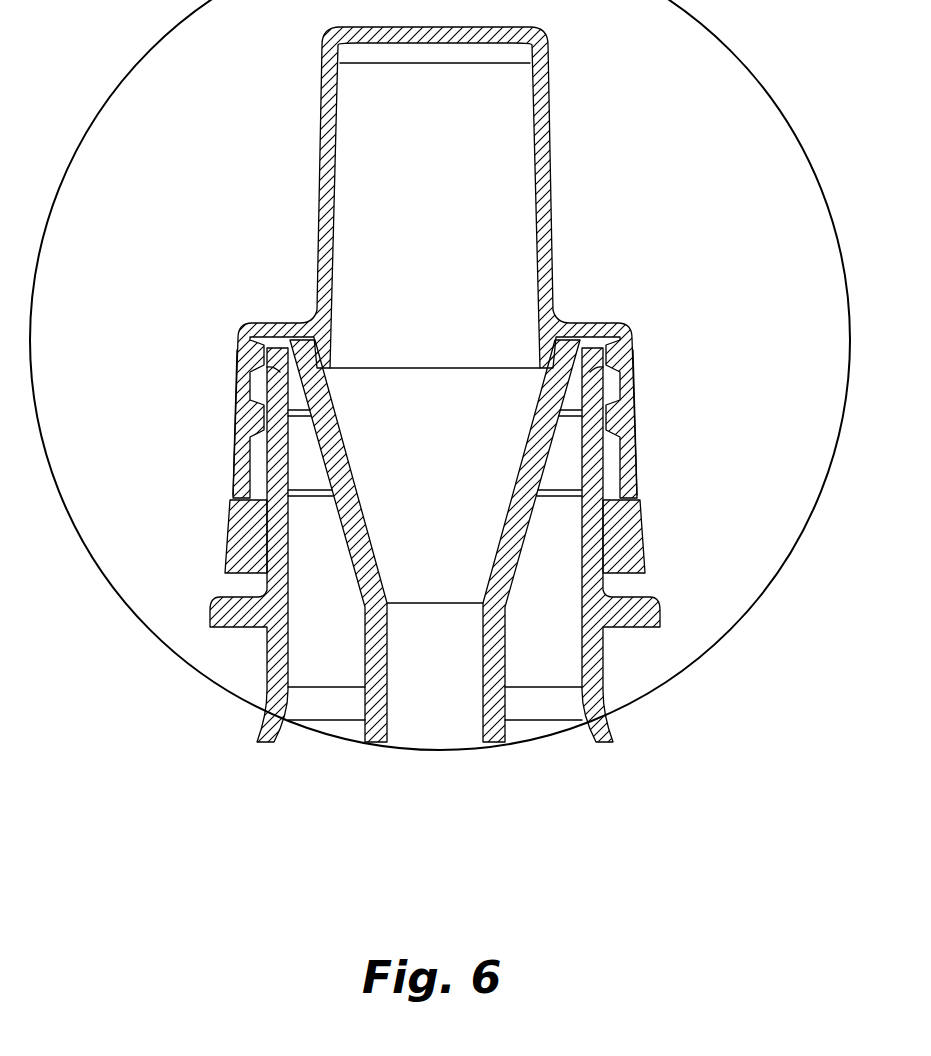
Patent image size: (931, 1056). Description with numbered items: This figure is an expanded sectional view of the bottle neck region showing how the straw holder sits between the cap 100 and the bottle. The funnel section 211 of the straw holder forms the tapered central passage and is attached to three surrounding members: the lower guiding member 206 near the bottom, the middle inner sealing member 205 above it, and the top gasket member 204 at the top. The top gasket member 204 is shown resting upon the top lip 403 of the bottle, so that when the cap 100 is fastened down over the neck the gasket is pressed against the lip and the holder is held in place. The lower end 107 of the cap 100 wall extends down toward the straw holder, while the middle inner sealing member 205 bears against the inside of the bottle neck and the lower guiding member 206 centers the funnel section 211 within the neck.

The cap 100 is at (455, 216).
The cap wall lower end 107 is at (334, 358).
The top gasket member 204 is at (305, 333).
The middle inner sealing member 205 is at (304, 420).
The lower guiding member 206 is at (307, 498).
The funnel section 211 is at (454, 514).
The top lip 403 is at (248, 383).